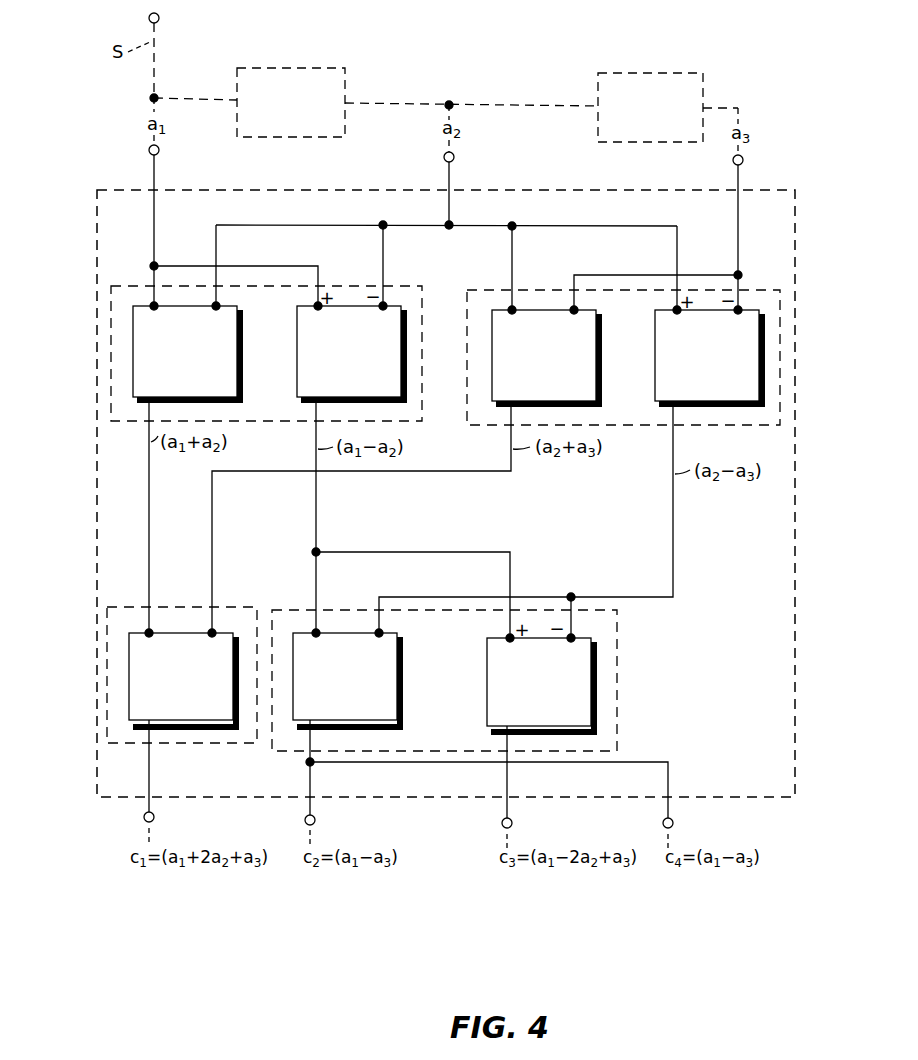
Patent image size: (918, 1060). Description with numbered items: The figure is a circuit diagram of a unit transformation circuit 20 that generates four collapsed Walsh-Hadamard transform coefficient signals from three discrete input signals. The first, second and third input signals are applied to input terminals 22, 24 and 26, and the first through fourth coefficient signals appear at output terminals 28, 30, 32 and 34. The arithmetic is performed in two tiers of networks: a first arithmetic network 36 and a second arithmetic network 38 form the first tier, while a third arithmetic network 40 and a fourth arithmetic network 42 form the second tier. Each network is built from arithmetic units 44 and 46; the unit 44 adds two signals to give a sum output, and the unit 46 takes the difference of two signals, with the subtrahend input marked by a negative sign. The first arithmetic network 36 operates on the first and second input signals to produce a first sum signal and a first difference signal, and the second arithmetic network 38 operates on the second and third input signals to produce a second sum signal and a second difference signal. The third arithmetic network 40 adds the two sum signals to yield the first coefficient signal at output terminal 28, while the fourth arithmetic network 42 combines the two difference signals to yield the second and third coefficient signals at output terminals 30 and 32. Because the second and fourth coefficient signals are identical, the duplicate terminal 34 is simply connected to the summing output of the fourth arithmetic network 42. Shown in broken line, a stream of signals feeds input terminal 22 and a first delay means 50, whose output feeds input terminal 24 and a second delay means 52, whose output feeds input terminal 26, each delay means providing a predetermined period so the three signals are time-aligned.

The unit transformation circuit 20 is at (96, 220).
The input terminal 22 is at (156, 178).
The input terminal 24 is at (451, 181).
The input terminal 26 is at (740, 186).
The output terminal 28 is at (154, 818).
The output terminal 30 is at (315, 820).
The output terminal 32 is at (512, 823).
The duplicate terminal 34 is at (673, 823).
The first arithmetic network 36 is at (411, 290).
The second arithmetic network 38 is at (467, 352).
The third arithmetic network 40 is at (233, 608).
The fourth arithmetic network 42 is at (622, 646).
The arithmetic unit 44 is at (243, 342).
The arithmetic unit 46 is at (297, 366).
The first delay means 50 is at (346, 80).
The second delay means 52 is at (708, 84).